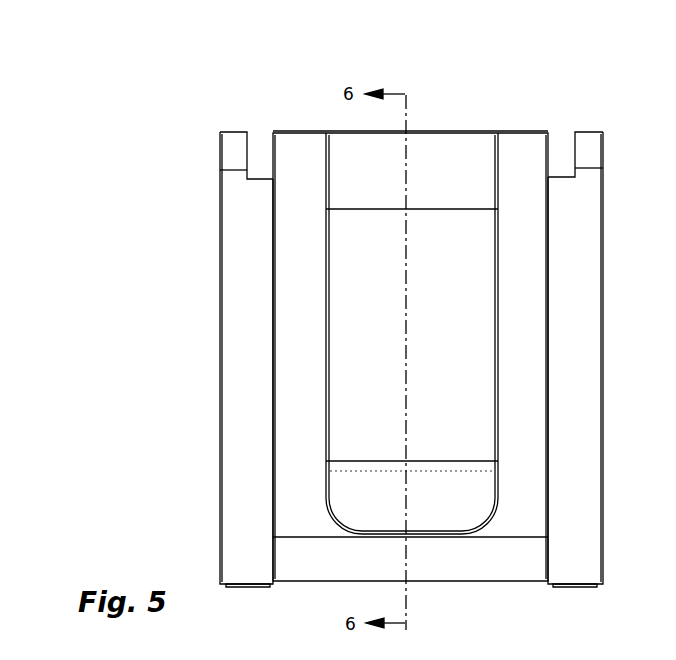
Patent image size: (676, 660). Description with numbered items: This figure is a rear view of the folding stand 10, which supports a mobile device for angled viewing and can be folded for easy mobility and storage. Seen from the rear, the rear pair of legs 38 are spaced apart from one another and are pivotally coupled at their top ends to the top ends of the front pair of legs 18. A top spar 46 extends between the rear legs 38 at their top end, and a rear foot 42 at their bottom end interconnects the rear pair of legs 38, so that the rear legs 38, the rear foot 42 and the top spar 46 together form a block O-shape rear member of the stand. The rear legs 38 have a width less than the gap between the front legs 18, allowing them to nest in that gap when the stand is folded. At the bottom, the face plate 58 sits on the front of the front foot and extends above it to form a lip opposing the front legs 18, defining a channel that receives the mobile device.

The folding stand 10 is at (207, 215).
The front pair of legs 18 is at (240, 267).
The rear pair of legs 38 is at (307, 367).
The top spar 46 is at (443, 160).
The face plate 58 is at (447, 478).
The rear foot 42 is at (478, 557).